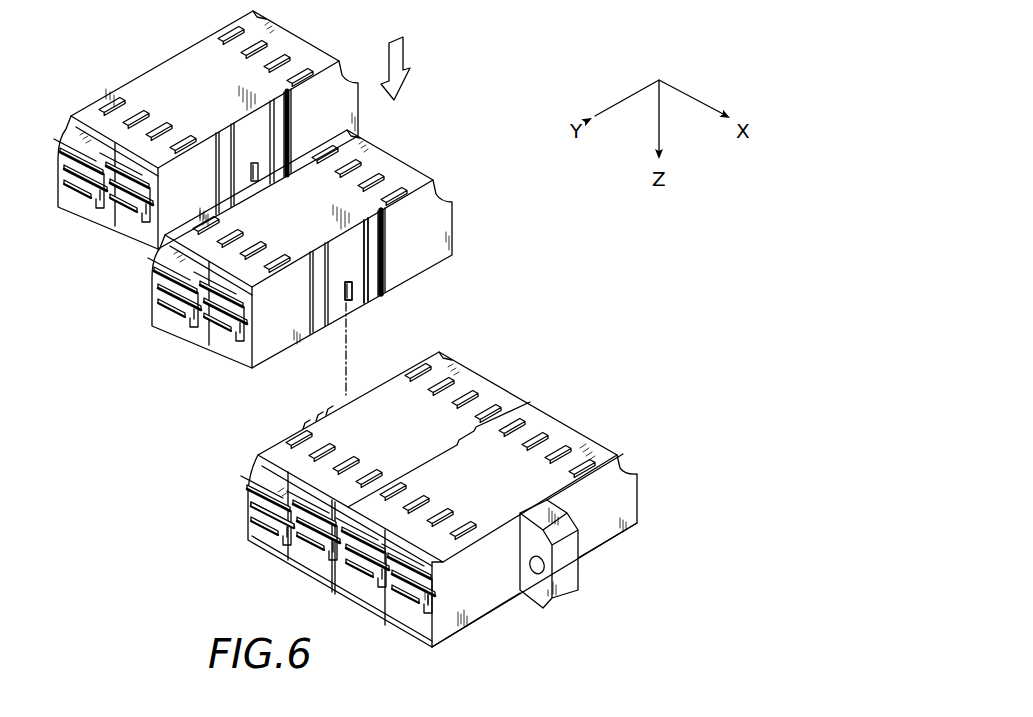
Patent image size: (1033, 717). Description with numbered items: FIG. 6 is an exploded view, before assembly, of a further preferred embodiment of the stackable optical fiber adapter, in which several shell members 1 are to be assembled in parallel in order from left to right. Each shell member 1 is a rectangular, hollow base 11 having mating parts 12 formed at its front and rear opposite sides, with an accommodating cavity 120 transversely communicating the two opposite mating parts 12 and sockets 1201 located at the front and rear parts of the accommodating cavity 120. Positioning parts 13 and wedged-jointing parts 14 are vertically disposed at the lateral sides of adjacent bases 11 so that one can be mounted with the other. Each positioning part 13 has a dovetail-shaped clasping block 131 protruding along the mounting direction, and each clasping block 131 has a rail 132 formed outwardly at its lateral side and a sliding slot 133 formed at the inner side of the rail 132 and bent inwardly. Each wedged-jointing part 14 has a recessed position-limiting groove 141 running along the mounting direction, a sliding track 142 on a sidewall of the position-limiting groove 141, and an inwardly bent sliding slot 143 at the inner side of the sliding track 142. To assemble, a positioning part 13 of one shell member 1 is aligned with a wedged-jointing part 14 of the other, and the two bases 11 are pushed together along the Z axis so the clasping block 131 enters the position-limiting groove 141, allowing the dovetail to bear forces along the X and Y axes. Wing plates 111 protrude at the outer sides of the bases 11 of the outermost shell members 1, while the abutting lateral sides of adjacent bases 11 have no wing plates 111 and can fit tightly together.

The shell member 1 is at (404, 490).
The base 11 is at (393, 382).
The wing plate 111 is at (572, 569).
The mating part 12 is at (305, 551).
The accommodating cavity 120 is at (276, 532).
The socket 1201 is at (235, 524).
The positioning part 13 is at (253, 407).
The clasping block 131 is at (312, 421).
The rail 132 is at (308, 421).
The sliding slot 133 is at (310, 423).
The wedged-jointing part 14 is at (450, 301).
The position-limiting groove 141 is at (362, 295).
The sliding track 142 is at (379, 286).
The sliding slot 143 is at (382, 258).